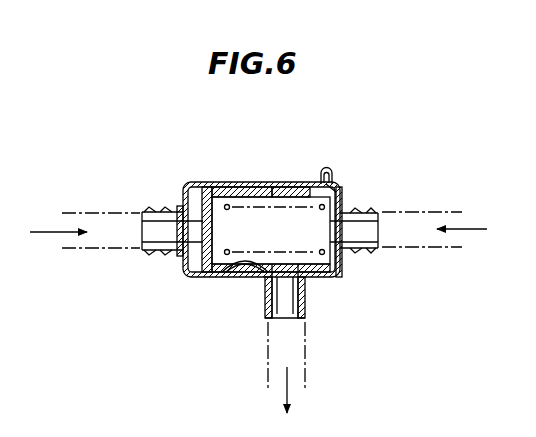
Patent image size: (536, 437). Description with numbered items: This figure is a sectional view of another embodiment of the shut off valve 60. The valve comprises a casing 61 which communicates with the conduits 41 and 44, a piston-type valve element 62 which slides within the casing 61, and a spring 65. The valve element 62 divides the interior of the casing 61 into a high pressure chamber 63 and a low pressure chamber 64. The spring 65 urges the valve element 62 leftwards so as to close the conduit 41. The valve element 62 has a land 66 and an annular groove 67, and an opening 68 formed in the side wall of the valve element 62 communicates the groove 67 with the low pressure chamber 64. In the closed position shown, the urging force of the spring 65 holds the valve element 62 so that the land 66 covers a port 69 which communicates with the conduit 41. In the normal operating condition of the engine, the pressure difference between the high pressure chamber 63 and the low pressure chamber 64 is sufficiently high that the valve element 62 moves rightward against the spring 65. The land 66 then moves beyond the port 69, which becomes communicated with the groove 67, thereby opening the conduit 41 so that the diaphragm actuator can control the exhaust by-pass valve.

The conduit 41 is at (417, 212).
The conduit 44 is at (92, 213).
The shut off valve 60 is at (212, 178).
The casing 61 is at (244, 186).
The piston-type valve element 62 is at (292, 186).
The high pressure chamber 63 is at (197, 258).
The low pressure chamber 64 is at (313, 225).
The spring 65 is at (338, 186).
The land 66 is at (263, 282).
The annular groove 67 is at (243, 275).
The opening 68 is at (233, 270).
The port 69 is at (290, 285).